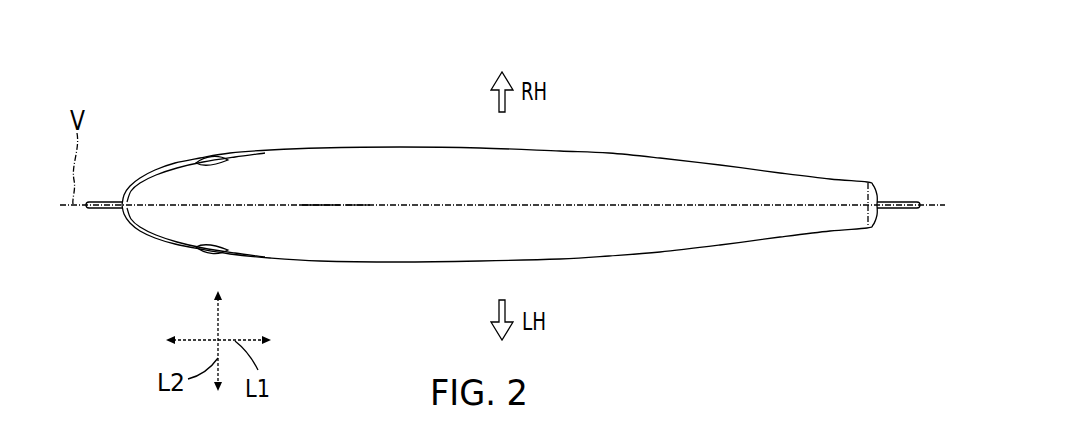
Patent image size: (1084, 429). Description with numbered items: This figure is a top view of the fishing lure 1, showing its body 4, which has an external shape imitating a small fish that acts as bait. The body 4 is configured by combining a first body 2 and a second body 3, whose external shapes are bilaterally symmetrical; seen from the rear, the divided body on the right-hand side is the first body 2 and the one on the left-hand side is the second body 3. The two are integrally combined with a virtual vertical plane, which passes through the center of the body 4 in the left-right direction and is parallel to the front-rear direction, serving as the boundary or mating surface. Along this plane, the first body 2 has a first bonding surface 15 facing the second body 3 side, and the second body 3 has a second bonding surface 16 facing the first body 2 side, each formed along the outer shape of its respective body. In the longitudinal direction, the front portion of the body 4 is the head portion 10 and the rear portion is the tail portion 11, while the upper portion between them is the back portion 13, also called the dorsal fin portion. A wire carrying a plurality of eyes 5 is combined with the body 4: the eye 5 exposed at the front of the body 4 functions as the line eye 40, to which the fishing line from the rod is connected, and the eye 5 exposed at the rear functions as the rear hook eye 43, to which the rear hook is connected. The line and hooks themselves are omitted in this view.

The lure 1 is at (779, 66).
The first body 2 is at (609, 160).
The second body 3 is at (642, 206).
The body 4 is at (700, 66).
The eyes 5 is at (515, 253).
The head portion 10 is at (153, 212).
The tail portion 11 is at (856, 211).
The back portion 13 is at (451, 210).
The first bonding surface 15 is at (332, 206).
The second bonding surface 16 is at (368, 206).
The line eye 40 is at (105, 209).
The rear hook eye 43 is at (897, 210).